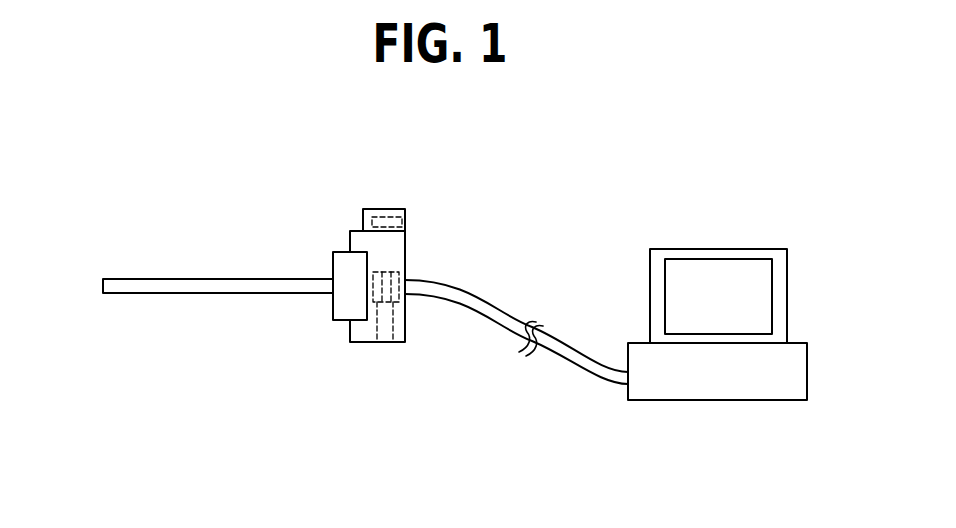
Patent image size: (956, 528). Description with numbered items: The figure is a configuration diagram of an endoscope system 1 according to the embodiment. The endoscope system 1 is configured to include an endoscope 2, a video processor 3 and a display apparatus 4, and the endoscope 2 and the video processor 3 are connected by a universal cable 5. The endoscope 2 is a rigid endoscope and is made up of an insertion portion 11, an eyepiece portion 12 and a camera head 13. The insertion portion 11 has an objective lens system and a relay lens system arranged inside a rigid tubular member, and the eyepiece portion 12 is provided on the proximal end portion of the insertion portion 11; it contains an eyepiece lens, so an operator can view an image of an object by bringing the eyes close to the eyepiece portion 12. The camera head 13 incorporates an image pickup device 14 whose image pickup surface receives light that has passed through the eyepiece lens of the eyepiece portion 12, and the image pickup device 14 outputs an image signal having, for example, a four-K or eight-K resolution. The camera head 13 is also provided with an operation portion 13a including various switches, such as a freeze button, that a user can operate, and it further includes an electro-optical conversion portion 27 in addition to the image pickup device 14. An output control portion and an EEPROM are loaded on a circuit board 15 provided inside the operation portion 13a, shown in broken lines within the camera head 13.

The endoscope system 1 is at (122, 204).
The endoscope 2 is at (235, 261).
The video processor 3 is at (718, 327).
The display apparatus 4 is at (765, 248).
The universal cable 5 is at (500, 303).
The insertion portion 11 is at (187, 294).
The eyepiece portion 12 is at (333, 263).
The camera head 13 is at (356, 229).
The operation portion 13a is at (401, 208).
The image pickup device 14 is at (372, 344).
The circuit board 15 is at (405, 220).
The electro-optical conversion portion 27 is at (400, 344).